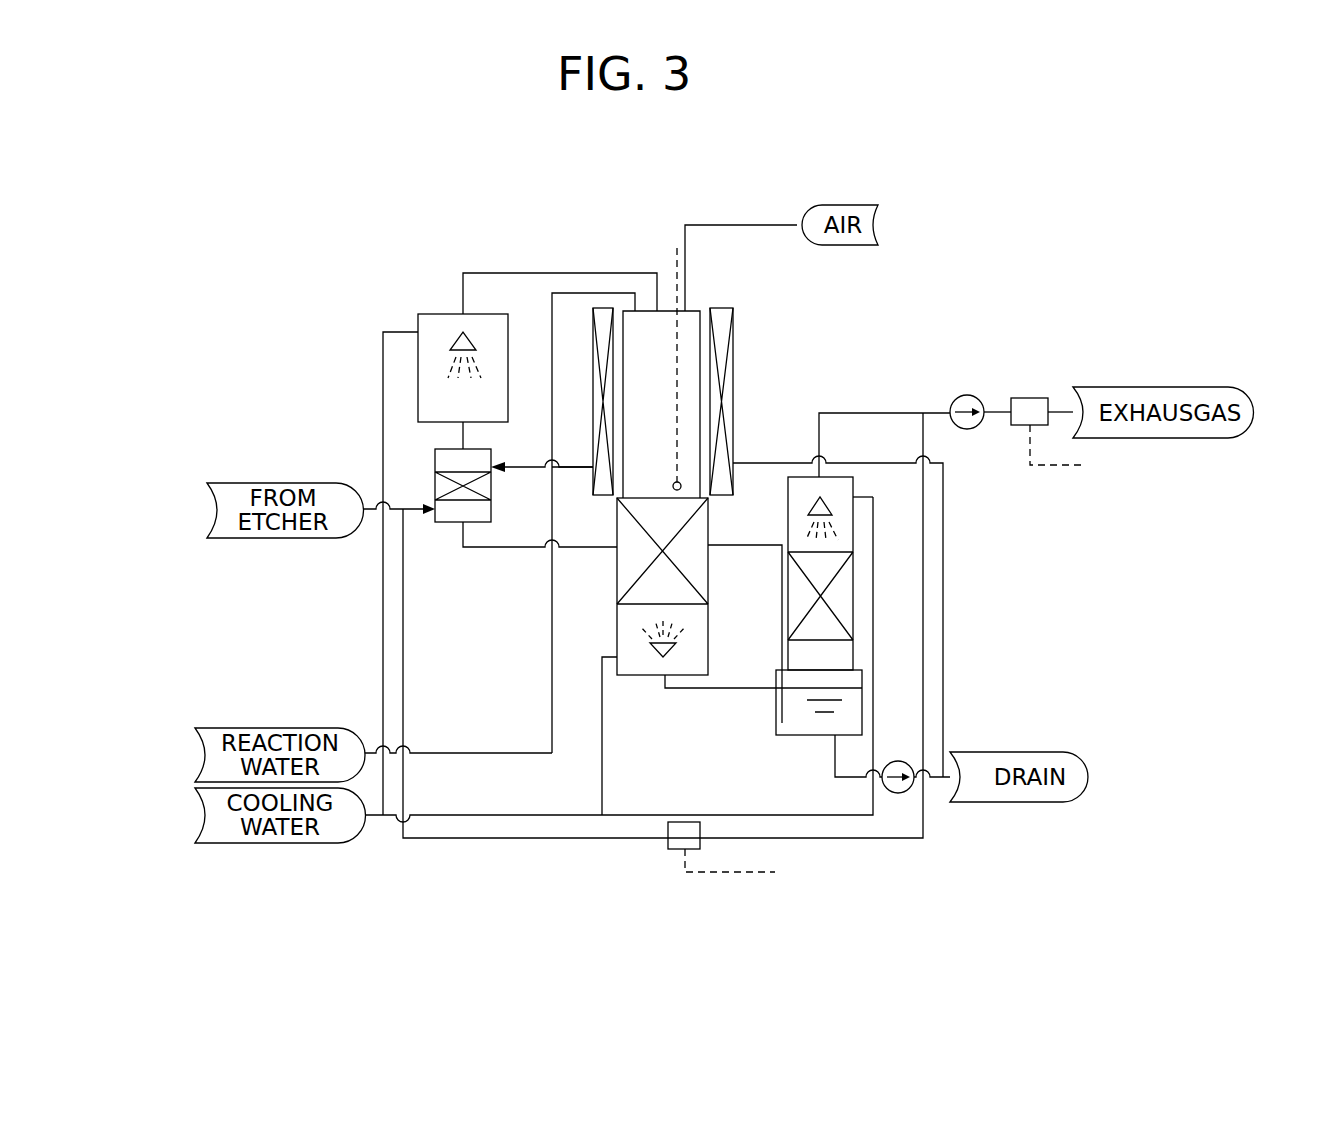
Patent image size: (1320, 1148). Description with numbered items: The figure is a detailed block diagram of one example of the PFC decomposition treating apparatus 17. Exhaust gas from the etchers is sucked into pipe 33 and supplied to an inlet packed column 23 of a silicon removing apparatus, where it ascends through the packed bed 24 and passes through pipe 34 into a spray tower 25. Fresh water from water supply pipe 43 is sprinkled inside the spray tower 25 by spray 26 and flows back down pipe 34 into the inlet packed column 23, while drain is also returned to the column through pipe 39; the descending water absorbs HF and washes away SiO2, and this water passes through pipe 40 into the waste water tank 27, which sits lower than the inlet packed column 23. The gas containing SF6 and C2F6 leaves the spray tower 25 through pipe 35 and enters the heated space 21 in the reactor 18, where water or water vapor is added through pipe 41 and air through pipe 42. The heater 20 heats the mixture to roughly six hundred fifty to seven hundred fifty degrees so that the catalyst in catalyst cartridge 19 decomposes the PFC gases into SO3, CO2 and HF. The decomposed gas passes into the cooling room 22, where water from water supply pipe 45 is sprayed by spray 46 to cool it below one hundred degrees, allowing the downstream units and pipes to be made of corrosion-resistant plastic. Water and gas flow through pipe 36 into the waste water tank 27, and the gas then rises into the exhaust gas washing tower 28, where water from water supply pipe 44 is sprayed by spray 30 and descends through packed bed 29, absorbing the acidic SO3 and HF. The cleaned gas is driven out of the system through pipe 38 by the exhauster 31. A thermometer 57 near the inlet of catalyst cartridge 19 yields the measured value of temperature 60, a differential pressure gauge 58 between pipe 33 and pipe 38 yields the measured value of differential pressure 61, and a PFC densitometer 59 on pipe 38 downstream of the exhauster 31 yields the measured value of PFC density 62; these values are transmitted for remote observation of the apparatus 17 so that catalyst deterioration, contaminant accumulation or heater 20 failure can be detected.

The PFC decomposition treating apparatus 17 is at (674, 206).
The reactor 18 is at (690, 335).
The catalyst cartridge 19 is at (616, 572).
The heater 20 is at (600, 308).
The heated space 21 is at (645, 405).
The cooling room 22 is at (616, 620).
The inlet packed column 23 is at (435, 480).
The packed bed 24 is at (485, 487).
The spray tower 25 is at (432, 313).
The spray 26 is at (450, 342).
The waste water tank 27 is at (865, 712).
The exhaust gas washing tower 28 is at (855, 598).
The packed bed 29 is at (790, 606).
The spray 30 is at (803, 510).
The exhauster 31 is at (967, 392).
The pipe 33 is at (368, 512).
The pipe 34 is at (461, 436).
The pipe 35 is at (628, 272).
The pipe 36 is at (738, 690).
The pipe 38 is at (872, 411).
The pipe 39 is at (574, 464).
The pipe 40 is at (574, 546).
The pipe 41 is at (484, 755).
The pipe 42 is at (750, 227).
The water supply pipe 43 is at (382, 621).
The water supply pipe 44 is at (707, 814).
The water supply pipe 45 is at (604, 726).
The spray 46 is at (680, 650).
The thermometer 57 is at (674, 484).
The differential pressure gauge 58 is at (667, 842).
The PFC densitometer 59 is at (1030, 397).
The measured value of temperature 60 is at (678, 252).
The measured value of differential pressure 61 is at (746, 874).
The measured value of PFC density 62 is at (1061, 467).